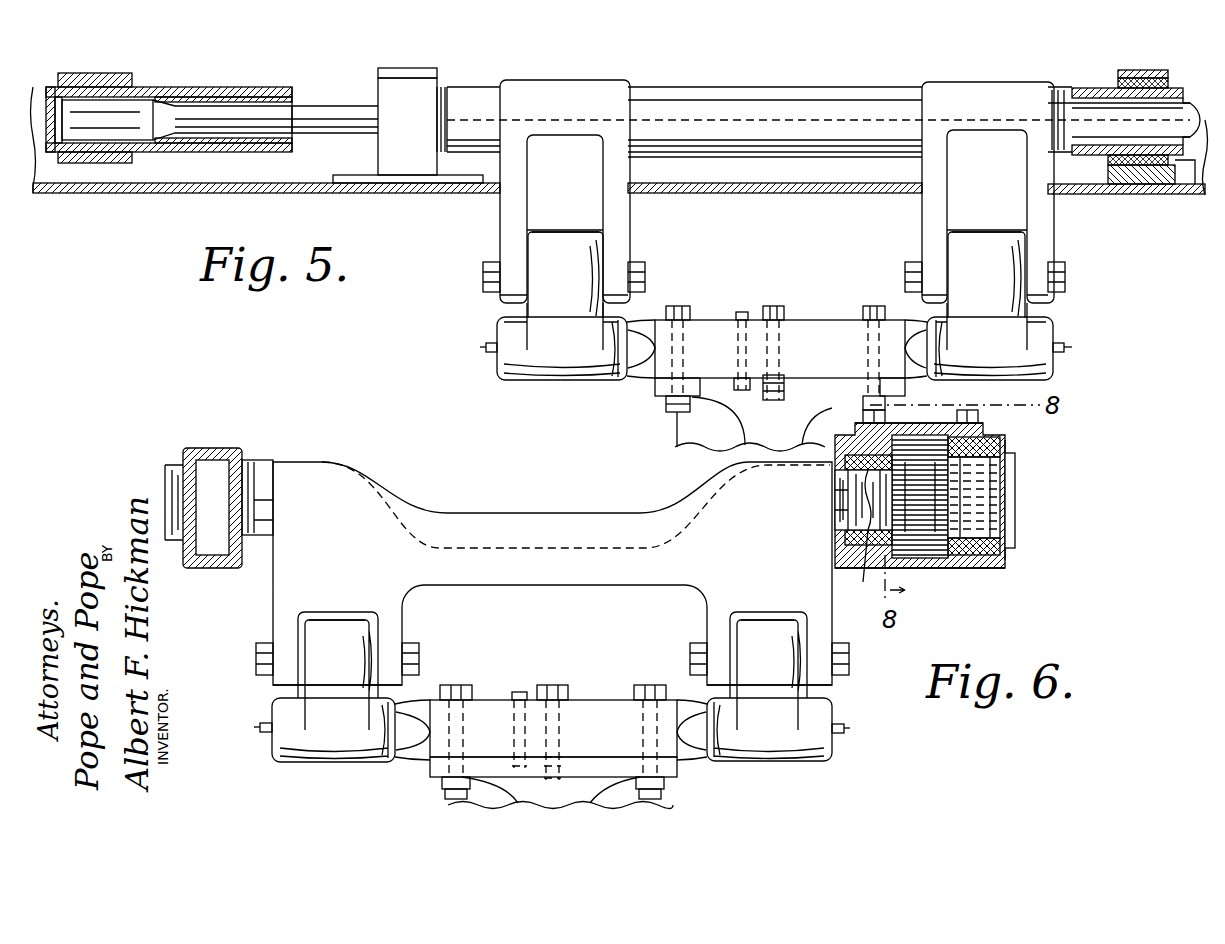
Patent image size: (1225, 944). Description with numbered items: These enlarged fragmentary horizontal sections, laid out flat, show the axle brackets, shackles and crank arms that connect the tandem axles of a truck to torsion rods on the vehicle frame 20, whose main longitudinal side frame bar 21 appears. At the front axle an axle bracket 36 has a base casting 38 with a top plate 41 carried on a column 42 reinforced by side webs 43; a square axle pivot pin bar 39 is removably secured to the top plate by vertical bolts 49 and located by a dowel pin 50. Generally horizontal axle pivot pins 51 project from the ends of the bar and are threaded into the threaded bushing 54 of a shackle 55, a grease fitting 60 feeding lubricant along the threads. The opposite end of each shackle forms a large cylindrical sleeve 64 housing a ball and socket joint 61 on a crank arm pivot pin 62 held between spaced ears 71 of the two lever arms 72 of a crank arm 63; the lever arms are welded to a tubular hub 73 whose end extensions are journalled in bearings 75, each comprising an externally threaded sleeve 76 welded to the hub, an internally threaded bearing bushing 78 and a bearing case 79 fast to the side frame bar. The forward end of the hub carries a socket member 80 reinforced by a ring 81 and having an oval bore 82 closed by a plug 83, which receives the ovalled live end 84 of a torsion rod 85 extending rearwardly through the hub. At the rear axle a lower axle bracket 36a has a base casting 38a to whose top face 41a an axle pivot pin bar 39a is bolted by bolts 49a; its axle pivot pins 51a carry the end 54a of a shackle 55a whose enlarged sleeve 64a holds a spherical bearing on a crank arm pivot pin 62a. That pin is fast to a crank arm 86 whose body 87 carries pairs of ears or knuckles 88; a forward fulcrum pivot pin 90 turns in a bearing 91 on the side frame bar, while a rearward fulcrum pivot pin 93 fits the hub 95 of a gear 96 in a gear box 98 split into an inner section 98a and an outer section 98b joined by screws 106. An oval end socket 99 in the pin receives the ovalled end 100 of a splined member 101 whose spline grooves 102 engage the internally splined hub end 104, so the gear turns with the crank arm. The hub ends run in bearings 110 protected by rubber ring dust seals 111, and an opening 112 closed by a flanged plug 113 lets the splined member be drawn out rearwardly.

In FIG. 5, the frame 20 is at (248, 195).
In FIG. 5, the main longitudinal side frame bar 21 is at (796, 196).
In FIG. 5, the axle bracket 36 is at (838, 322).
In FIG. 5, the base casting 38 is at (676, 448).
In FIG. 5, the axle pivot pin bar 39 is at (780, 349).
In FIG. 5, the top plate 41 is at (660, 390).
In FIG. 5, the column 42 is at (762, 421).
In FIG. 5, the side webs 43 is at (728, 449).
In FIG. 5, the vertical bolts 49 is at (775, 309).
In FIG. 5, the locating dowel pin 50 is at (745, 312).
In FIG. 5, the axle pivot pins 51 is at (638, 332).
In FIG. 5, the threaded bushing 54 is at (563, 381).
In FIG. 5, the shackle 55 is at (976, 250).
In FIG. 5, the grease fitting 60 is at (480, 348).
In FIG. 5, the ball and socket joint 61 is at (562, 233).
In FIG. 5, the crank arm pivot pin 62 is at (483, 272).
In FIG. 5, the crank arm 63 is at (768, 97).
In FIG. 5, the cylindrical sleeve 64 is at (776, 275).
In FIG. 5, the ears 71 is at (503, 240).
In FIG. 5, the lever arms 72 is at (565, 82).
In FIG. 5, the tubular hub 73 is at (695, 87).
In FIG. 5, the bearings 75 is at (397, 70).
In FIG. 5, the externally threaded sleeve 76 is at (444, 88).
In FIG. 5, the internally threaded bearing bushing 78 is at (1178, 90).
In FIG. 5, the bearing housing 79 is at (1122, 70).
In FIG. 5, the socket member 80 is at (147, 87).
In FIG. 5, the surrounding ring 81 is at (124, 73).
In FIG. 5, the bore 82 is at (76, 120).
In FIG. 5, the plug 83 is at (44, 90).
In FIG. 5, the ovalled live end 84 is at (107, 118).
In FIG. 5, the torsion rod 85 is at (232, 101).
In FIG. 6, the crank arm 86 is at (416, 497).
In FIG. 6, the body 87 is at (576, 520).
In FIG. 6, the ears or knuckles 88 is at (404, 630).
In FIG. 6, the fulcrum pivot pin 90 is at (259, 462).
In FIG. 6, the bearing 91 is at (209, 449).
In FIG. 6, the fulcrum pivot pin 93 is at (845, 522).
In FIG. 6, the hub 95 is at (835, 486).
In FIG. 6, the gear 96 is at (936, 560).
In FIG. 6, the gear box 98 is at (982, 568).
In FIG. 6, the inner section 98a is at (938, 425).
In FIG. 6, the outer section 98b is at (1000, 568).
In FIG. 6, the oval end socket 99 is at (858, 540).
In FIG. 6, the ovalled end 100 is at (855, 494).
In FIG. 6, the splined member 101 is at (855, 506).
In FIG. 6, the spline grooves 102 is at (1020, 492).
In FIG. 6, the hub end 104 is at (1000, 506).
In FIG. 6, the screws 106 is at (981, 423).
In FIG. 6, the bearings 110 is at (985, 441).
In FIG. 6, the rubber ring 111 is at (1000, 446).
In FIG. 6, the opening 112 is at (1016, 470).
In FIG. 6, the flanged plug 113 is at (1016, 545).
In FIG. 6, the axle bracket 36a is at (690, 774).
In FIG. 6, the base casting 38a is at (506, 762).
In FIG. 6, the axle pivot pin bar 39a is at (603, 706).
In FIG. 6, the flange 41a is at (631, 760).
In FIG. 6, the bolts 49a is at (545, 690).
In FIG. 6, the axle pivot pins 51a is at (403, 762).
In FIG. 6, the shackle end 54a is at (303, 764).
In FIG. 6, the shackle 55a is at (336, 628).
In FIG. 6, the crank arm pivot pin 62a is at (256, 655).
In FIG. 6, the enlarged sleeve 64a is at (552, 671).